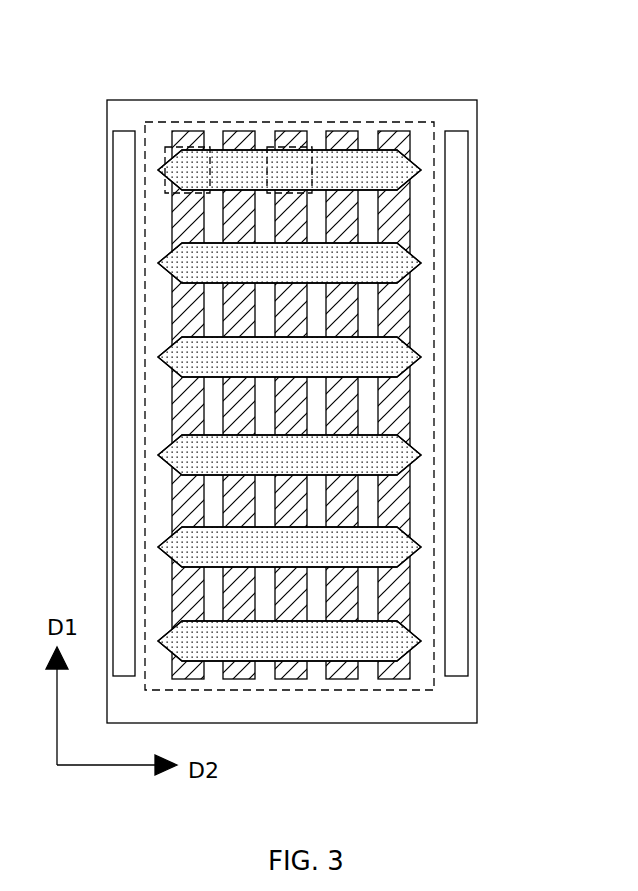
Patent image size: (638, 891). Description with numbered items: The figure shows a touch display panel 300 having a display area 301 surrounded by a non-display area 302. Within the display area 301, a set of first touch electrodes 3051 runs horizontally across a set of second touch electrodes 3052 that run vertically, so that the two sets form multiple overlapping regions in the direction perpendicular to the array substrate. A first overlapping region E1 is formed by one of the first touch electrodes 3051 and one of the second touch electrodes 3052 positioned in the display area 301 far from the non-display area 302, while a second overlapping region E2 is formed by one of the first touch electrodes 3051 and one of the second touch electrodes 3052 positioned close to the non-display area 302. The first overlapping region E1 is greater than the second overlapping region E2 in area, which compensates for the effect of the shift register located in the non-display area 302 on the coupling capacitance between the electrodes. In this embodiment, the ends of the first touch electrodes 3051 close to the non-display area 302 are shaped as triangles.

The touch display panel 300 is at (88, 58).
The display area 301 is at (420, 153).
The non-display area 302 is at (452, 702).
The first touch electrodes 3051 is at (180, 272).
The second touch electrodes 3052 is at (407, 322).
The first overlapping region E1 is at (310, 150).
The second overlapping region E2 is at (165, 152).